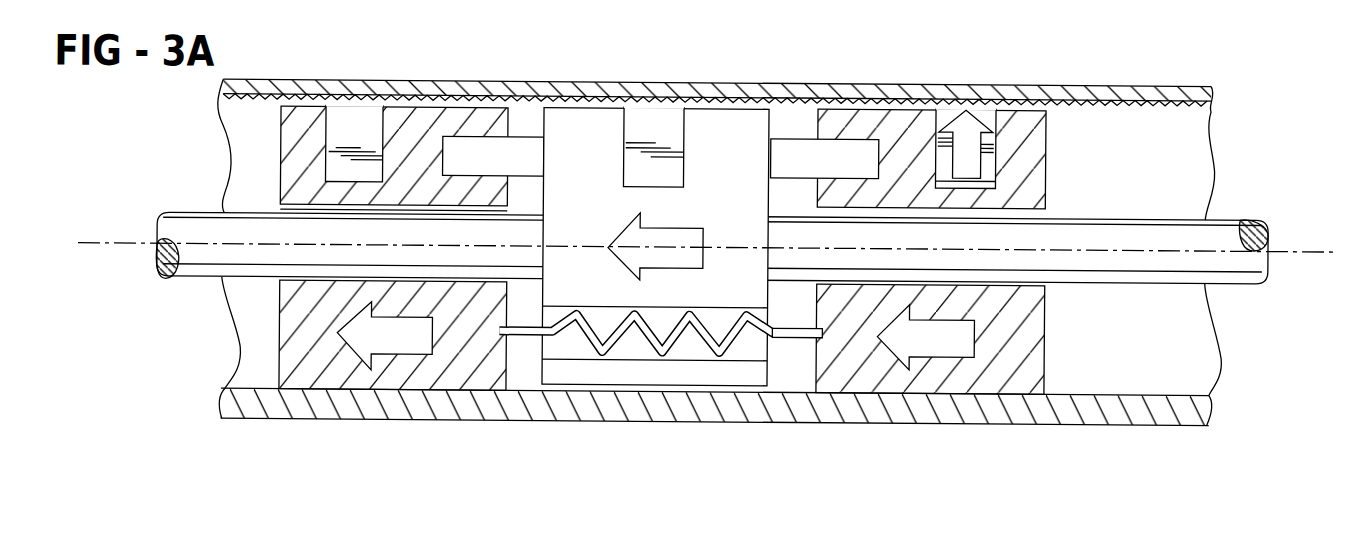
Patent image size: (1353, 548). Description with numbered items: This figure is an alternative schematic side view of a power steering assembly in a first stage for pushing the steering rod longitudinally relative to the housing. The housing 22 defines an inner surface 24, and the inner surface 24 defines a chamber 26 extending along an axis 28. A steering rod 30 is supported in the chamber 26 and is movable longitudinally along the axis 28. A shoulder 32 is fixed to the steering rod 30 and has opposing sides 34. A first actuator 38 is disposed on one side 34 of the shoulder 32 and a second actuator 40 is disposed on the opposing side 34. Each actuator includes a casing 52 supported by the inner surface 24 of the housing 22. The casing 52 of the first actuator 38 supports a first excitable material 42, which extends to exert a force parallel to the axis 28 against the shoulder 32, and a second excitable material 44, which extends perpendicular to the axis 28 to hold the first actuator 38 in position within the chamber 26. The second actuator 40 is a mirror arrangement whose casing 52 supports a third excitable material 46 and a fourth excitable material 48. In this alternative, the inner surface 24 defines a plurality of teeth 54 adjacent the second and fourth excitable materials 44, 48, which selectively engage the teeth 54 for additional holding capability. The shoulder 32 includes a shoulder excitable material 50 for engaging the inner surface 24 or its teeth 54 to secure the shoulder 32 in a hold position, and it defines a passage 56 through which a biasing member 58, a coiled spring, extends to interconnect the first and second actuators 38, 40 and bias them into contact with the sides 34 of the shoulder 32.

The housing 22 is at (273, 410).
The inner surface 24 is at (233, 375).
The chamber 26 is at (247, 355).
The axis 28 is at (123, 249).
The steering rod 30 is at (198, 226).
The shoulder 32 is at (722, 122).
The opposing sides 34 is at (522, 100).
The first actuator 38 is at (1032, 156).
The second actuator 40 is at (280, 148).
The first excitable material 42 is at (803, 135).
The second excitable material 44 is at (940, 106).
The third excitable material 46 is at (513, 132).
The fourth excitable material 48 is at (353, 85).
The shoulder excitable material 50 is at (650, 124).
The casing 52 is at (280, 316).
The teeth 54 is at (1136, 102).
The passage 56 is at (552, 351).
The biasing member 58 is at (796, 340).